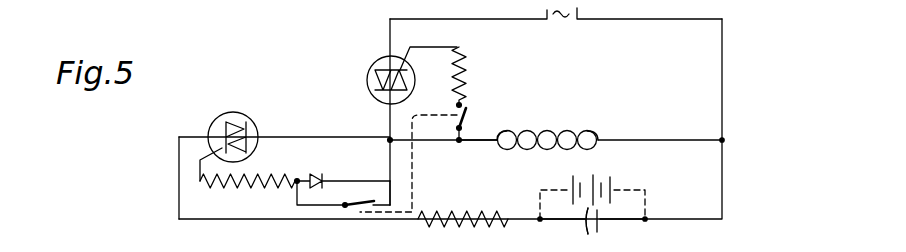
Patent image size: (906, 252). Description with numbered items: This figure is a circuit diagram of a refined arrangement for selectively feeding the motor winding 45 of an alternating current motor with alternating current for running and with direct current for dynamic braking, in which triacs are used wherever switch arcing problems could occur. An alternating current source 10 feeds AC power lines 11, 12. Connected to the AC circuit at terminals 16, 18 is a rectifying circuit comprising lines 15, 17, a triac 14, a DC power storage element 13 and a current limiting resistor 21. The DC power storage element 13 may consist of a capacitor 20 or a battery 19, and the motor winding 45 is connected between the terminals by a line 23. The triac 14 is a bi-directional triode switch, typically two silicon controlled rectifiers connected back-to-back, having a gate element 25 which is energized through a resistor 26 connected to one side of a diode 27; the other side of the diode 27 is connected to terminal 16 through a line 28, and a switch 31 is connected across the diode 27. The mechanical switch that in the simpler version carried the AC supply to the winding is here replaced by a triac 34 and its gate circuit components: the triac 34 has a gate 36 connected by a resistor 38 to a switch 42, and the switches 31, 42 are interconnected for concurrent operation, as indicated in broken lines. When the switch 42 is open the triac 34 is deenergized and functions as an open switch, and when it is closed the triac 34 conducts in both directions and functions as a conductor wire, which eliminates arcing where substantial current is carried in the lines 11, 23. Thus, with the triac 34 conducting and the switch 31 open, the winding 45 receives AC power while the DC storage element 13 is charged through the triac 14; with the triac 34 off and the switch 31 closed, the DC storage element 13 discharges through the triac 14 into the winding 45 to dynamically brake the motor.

The alternating current source 10 is at (575, 10).
The AC power line 11 is at (388, 106).
The AC power line 12 is at (723, 68).
The DC power storage element 13 is at (582, 225).
The triac 14 is at (222, 114).
The line 15 is at (179, 178).
The terminal 16 is at (388, 139).
The line 17 is at (722, 178).
The terminal 18 is at (725, 141).
The battery 19 is at (594, 174).
The capacitor 20 is at (603, 224).
The current limiting resistor 21 is at (456, 210).
The line 23 is at (480, 143).
The gate element 25 is at (200, 160).
The resistor 26 is at (239, 188).
The diode 27 is at (319, 172).
The line 28 is at (389, 152).
The switch 31 is at (355, 203).
The triac 34 is at (366, 82).
The gate 36 is at (409, 48).
The resistor 38 is at (470, 73).
The switch 42 is at (467, 115).
The motor winding 45 is at (551, 130).